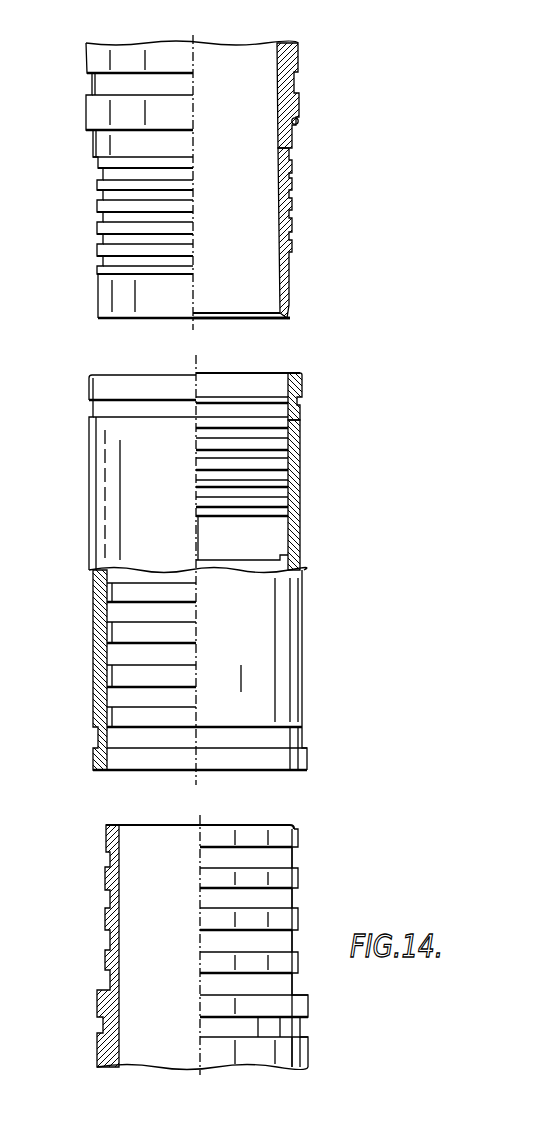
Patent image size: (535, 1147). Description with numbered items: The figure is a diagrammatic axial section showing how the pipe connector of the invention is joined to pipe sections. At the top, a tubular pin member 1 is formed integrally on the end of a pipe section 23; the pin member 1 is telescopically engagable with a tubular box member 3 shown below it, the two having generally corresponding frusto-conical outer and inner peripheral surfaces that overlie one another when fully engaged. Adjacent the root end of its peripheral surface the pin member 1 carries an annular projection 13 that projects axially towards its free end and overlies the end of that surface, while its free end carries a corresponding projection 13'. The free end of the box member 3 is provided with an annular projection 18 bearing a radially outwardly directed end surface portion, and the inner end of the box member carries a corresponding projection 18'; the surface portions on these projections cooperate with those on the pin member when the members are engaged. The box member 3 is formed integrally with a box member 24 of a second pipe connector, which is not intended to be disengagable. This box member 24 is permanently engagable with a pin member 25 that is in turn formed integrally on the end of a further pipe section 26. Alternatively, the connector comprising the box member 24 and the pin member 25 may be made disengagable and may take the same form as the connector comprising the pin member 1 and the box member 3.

The pin member 1 is at (235, 185).
The box member 3 is at (163, 484).
The annular projection 13 is at (319, 120).
The annular projection 13' is at (242, 543).
The annular projection 18 is at (268, 384).
The annular projection 18' is at (264, 304).
The pipe section 23 is at (300, 63).
The box member 24 is at (253, 649).
The pin member 25 is at (180, 944).
The pipe section 26 is at (292, 1050).